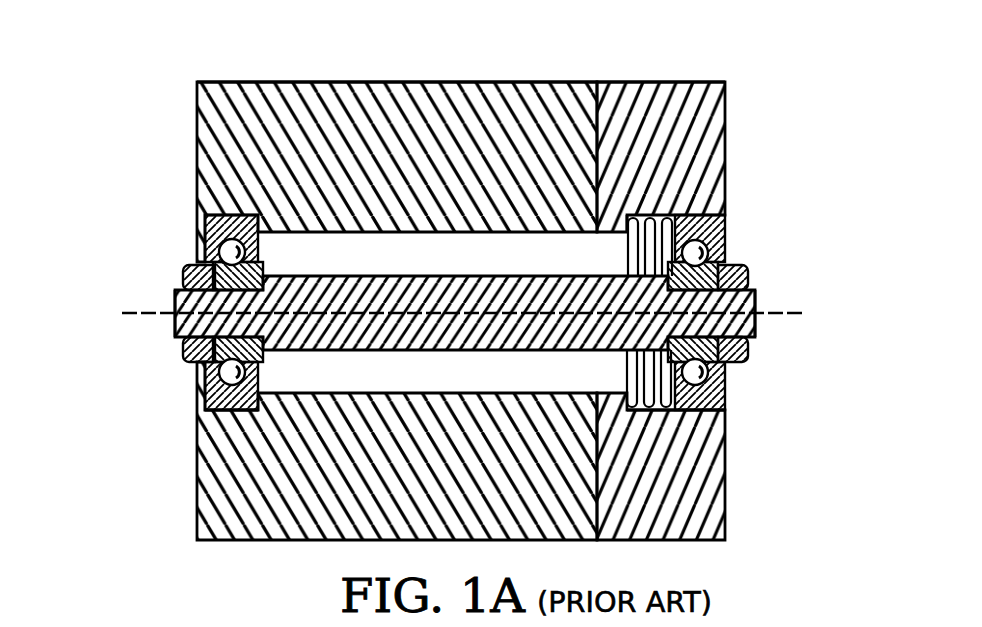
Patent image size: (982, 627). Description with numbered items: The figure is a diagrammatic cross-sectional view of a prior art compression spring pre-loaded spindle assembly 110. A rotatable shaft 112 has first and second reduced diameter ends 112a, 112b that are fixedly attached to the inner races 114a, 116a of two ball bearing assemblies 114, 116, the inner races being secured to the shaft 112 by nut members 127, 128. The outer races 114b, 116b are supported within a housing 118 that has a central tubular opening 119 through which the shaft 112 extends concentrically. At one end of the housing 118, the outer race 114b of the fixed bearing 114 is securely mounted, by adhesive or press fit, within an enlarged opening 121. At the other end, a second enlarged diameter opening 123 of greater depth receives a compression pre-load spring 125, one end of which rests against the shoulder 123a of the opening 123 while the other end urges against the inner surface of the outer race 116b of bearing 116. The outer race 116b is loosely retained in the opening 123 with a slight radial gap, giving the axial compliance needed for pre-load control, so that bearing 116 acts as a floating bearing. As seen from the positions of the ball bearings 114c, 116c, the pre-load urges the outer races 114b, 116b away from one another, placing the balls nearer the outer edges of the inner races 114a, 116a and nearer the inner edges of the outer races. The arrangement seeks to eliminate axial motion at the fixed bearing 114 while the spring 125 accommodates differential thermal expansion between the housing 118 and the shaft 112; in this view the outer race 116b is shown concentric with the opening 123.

The spring pre-loaded spindle assembly 110 is at (625, 54).
The rotatable shaft 112 is at (520, 276).
The first reduced diameter end 112a is at (176, 320).
The second reduced diameter end 112b is at (757, 320).
The ball bearing assembly 114 is at (213, 312).
The inner race 114a is at (262, 362).
The outer race 114b is at (212, 237).
The ball bearings 114c is at (247, 252).
The ball bearing assembly 116 is at (686, 307).
The inner race 116a is at (745, 272).
The outer race 116b is at (724, 232).
The ball bearings 116c is at (680, 373).
The housing 118 is at (336, 82).
The central tubular opening 119 is at (421, 264).
The enlarged opening 121 is at (222, 411).
The second enlarged diameter opening 123 is at (700, 405).
The shoulder 123a is at (628, 232).
The compression pre-load spring 125 is at (655, 222).
The nut member 127 is at (186, 277).
The nut member 128 is at (750, 287).